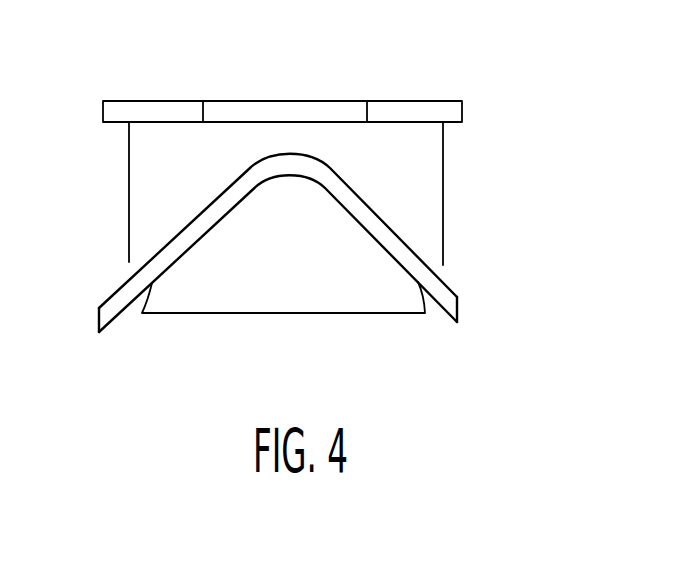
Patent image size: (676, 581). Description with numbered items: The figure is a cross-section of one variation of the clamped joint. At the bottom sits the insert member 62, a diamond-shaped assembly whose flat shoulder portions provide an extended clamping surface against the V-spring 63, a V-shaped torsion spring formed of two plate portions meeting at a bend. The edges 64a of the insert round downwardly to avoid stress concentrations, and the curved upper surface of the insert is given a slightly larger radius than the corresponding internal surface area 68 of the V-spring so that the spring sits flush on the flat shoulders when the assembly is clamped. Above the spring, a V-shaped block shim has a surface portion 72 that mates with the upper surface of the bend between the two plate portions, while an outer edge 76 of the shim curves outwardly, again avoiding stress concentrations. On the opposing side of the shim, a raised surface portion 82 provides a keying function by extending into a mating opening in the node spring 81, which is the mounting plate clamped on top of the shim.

The insert member 62 is at (332, 313).
The V-spring 63 is at (398, 243).
The edges of the insert 64a is at (141, 313).
The internal surface area of the V-shaped torsion spring 68 is at (408, 168).
The surface portion of the shim 72 is at (430, 173).
The outer edge of the shim 76 is at (129, 262).
The node spring 81 is at (414, 110).
The raised surface portion 82 is at (283, 107).